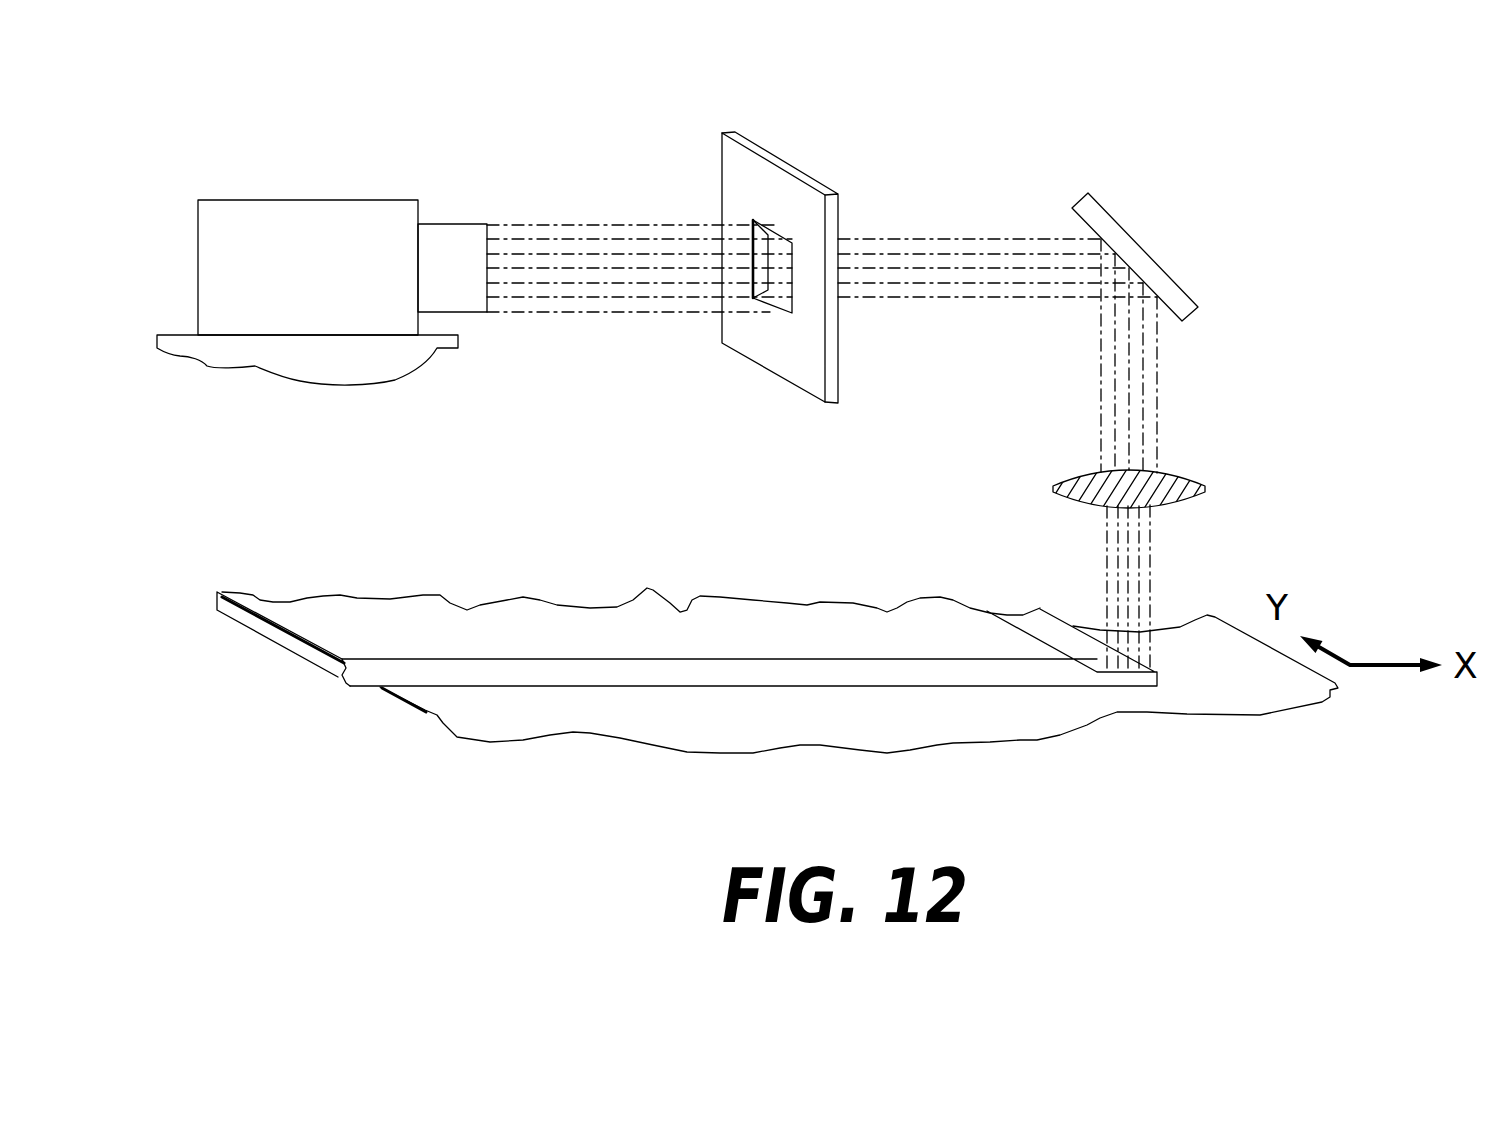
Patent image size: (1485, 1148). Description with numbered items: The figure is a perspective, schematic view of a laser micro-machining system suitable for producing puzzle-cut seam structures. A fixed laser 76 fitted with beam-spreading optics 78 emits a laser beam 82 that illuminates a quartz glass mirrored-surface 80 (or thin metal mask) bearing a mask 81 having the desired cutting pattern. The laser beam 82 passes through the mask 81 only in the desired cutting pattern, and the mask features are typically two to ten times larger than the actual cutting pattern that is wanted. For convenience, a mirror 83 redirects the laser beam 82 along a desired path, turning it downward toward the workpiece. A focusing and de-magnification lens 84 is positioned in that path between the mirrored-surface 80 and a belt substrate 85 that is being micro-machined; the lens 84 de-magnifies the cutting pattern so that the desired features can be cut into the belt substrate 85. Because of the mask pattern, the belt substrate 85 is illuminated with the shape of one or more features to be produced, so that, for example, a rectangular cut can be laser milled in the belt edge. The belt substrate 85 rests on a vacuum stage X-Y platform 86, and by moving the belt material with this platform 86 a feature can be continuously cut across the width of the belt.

The fixed laser 76 is at (313, 200).
The beam-spreading optics 78 is at (457, 224).
The quartz glass mirrored-surface 80 is at (788, 162).
The mask 81 is at (792, 312).
The laser beam 82 is at (595, 225).
The mirror 83 is at (1150, 253).
The focusing and de-magnification lens 84 is at (1205, 482).
The belt substrate 85 is at (880, 612).
The vacuum stage X-Y platform 86 is at (1262, 715).